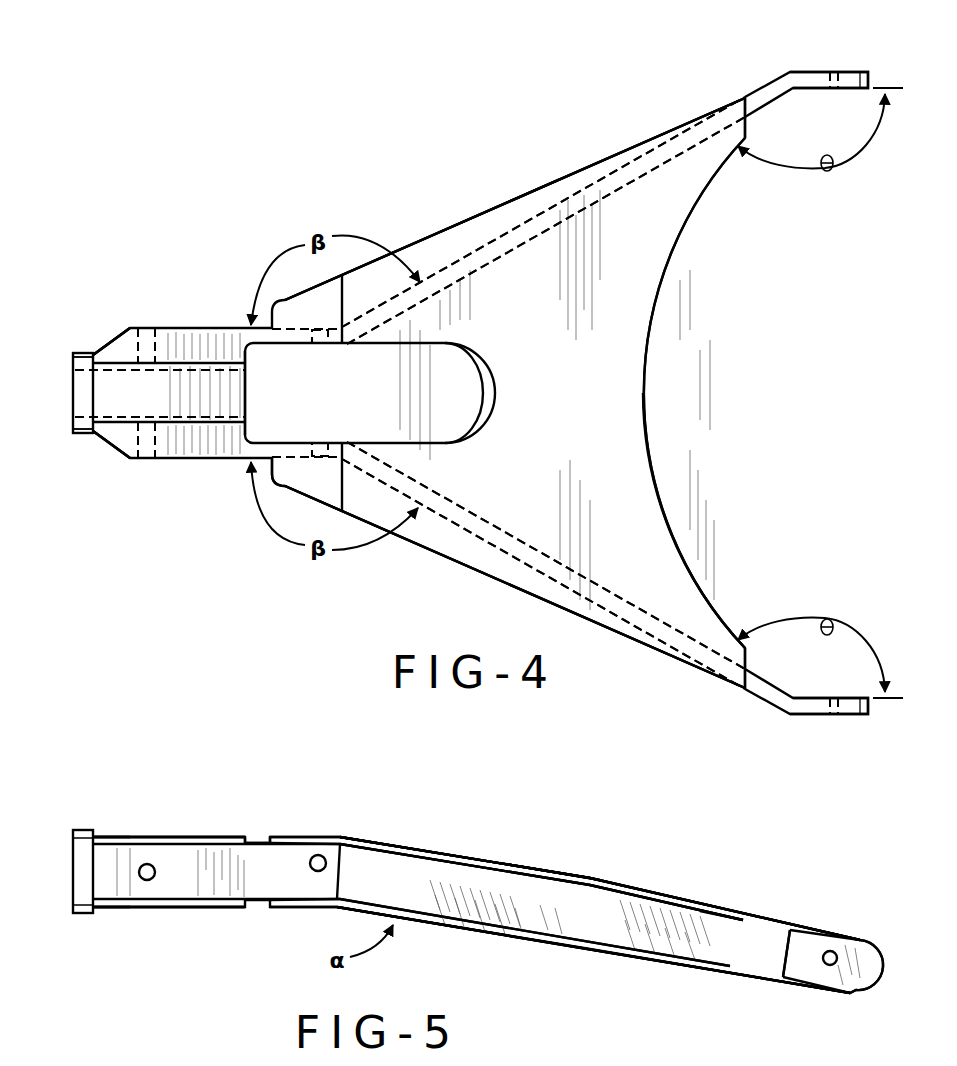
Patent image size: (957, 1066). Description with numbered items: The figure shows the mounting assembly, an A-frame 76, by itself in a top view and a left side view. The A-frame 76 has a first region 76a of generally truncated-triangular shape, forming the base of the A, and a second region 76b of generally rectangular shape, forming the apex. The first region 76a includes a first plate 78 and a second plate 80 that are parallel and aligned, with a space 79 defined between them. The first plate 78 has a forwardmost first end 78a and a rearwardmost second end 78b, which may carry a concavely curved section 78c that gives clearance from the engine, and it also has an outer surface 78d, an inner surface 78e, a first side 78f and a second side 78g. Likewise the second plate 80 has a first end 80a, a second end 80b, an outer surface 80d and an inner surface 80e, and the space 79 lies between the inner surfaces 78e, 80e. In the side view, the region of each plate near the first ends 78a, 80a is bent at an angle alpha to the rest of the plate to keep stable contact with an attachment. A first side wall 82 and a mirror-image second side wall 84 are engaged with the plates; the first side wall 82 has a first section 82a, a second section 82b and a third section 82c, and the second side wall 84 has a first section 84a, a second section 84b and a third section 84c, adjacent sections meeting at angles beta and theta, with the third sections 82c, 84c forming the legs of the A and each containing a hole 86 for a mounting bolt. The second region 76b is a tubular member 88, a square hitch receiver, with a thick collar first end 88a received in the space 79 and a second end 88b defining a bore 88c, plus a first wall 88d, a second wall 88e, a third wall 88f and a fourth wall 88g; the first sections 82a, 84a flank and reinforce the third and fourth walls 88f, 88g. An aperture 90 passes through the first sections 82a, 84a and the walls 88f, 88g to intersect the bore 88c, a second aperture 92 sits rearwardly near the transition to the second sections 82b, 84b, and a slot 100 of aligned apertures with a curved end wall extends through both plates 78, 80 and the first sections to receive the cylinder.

In FIG. 4, the A-frame 76 is at (345, 192).
In FIG. 5, the A-frame 76 is at (590, 856).
In FIG. 4, the first region 76a is at (497, 186).
In FIG. 5, the first region 76a is at (548, 860).
In FIG. 4, the second region 76b is at (98, 323).
In FIG. 5, the second region 76b is at (113, 818).
In FIG. 4, the first plate 78 is at (612, 452).
In FIG. 5, the first plate 78 is at (457, 847).
In FIG. 4, the first end 78a is at (273, 470).
In FIG. 5, the first end 78a is at (270, 840).
In FIG. 4, the second end 78b is at (752, 120).
In FIG. 5, the second end 78b is at (746, 920).
In FIG. 4, the concavely curved section 78c is at (645, 390).
In FIG. 4, the outer surface 78d is at (607, 497).
In FIG. 5, the outer surface 78d is at (517, 862).
In FIG. 5, the inner surface 78e is at (713, 916).
In FIG. 4, the first side 78f is at (484, 215).
In FIG. 4, the second side 78g is at (427, 553).
In FIG. 4, the space 79 is at (450, 543).
In FIG. 5, the space 79 is at (528, 910).
In FIG. 5, the second plate 80 is at (615, 975).
In FIG. 5, the first end 80a is at (275, 907).
In FIG. 5, the second end 80b is at (737, 977).
In FIG. 5, the outer surface 80d is at (425, 925).
In FIG. 5, the inner surface 80e is at (618, 965).
In FIG. 4, the first side wall 82 is at (763, 82).
In FIG. 4, the first section 82a is at (124, 347).
In FIG. 4, the second section 82b is at (550, 213).
In FIG. 4, the third section 82c is at (838, 72).
In FIG. 4, the second side wall 84 is at (762, 703).
In FIG. 5, the second side wall 84 is at (594, 885).
In FIG. 4, the first section 84a is at (120, 440).
In FIG. 5, the first section 84a is at (180, 873).
In FIG. 4, the second section 84b is at (628, 620).
In FIG. 5, the second section 84b is at (395, 877).
In FIG. 4, the third section 84c is at (838, 718).
In FIG. 5, the third section 84c is at (814, 940).
In FIG. 4, the hole 86 is at (830, 72).
In FIG. 5, the hole 86 is at (828, 965).
In FIG. 4, the tubular member 88 is at (218, 436).
In FIG. 5, the tubular member 88 is at (193, 910).
In FIG. 4, the first end 88a is at (96, 406).
In FIG. 5, the first end 88a is at (78, 908).
In FIG. 4, the second end 88b is at (248, 378).
In FIG. 5, the second end 88b is at (246, 842).
In FIG. 4, the bore 88c is at (92, 388).
In FIG. 4, the first wall 88d is at (203, 390).
In FIG. 5, the first wall 88d is at (162, 838).
In FIG. 5, the second wall 88e is at (130, 907).
In FIG. 4, the third wall 88f is at (177, 363).
In FIG. 4, the fourth wall 88g is at (188, 424).
In FIG. 4, the aperture 90 is at (147, 330).
In FIG. 5, the aperture 90 is at (150, 880).
In FIG. 4, the second aperture 92 is at (318, 347).
In FIG. 5, the second aperture 92 is at (318, 855).
In FIG. 4, the slot 100 is at (437, 360).